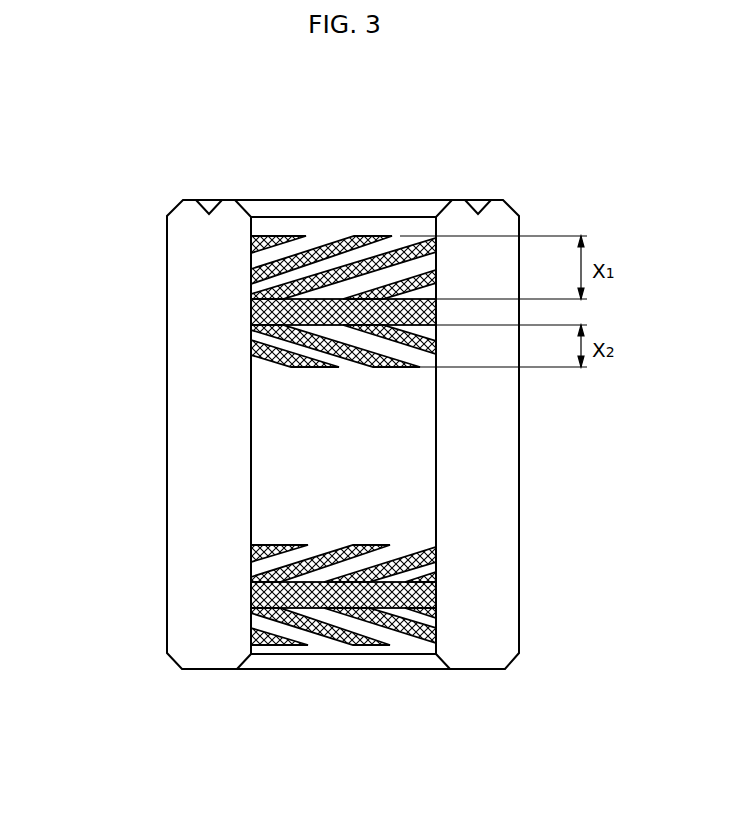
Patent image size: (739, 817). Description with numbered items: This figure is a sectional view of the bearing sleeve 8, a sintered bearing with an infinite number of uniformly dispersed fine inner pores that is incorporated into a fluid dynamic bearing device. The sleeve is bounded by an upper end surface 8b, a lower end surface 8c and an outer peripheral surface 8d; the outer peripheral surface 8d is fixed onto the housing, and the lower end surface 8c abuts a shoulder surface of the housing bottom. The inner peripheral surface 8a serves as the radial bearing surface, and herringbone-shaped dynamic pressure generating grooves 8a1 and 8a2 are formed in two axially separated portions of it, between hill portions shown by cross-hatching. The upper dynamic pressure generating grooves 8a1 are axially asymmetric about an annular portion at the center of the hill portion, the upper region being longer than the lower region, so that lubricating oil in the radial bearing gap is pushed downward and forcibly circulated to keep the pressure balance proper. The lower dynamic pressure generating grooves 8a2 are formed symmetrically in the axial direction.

The bearing sleeve 8 is at (147, 233).
The inner peripheral surface 8a is at (437, 436).
The dynamic pressure generating grooves 8a1 is at (298, 246).
The dynamic pressure generating grooves 8a2 is at (300, 555).
The upper end surface 8b is at (225, 200).
The lower end surface 8c is at (217, 670).
The outer peripheral surface 8d is at (168, 375).